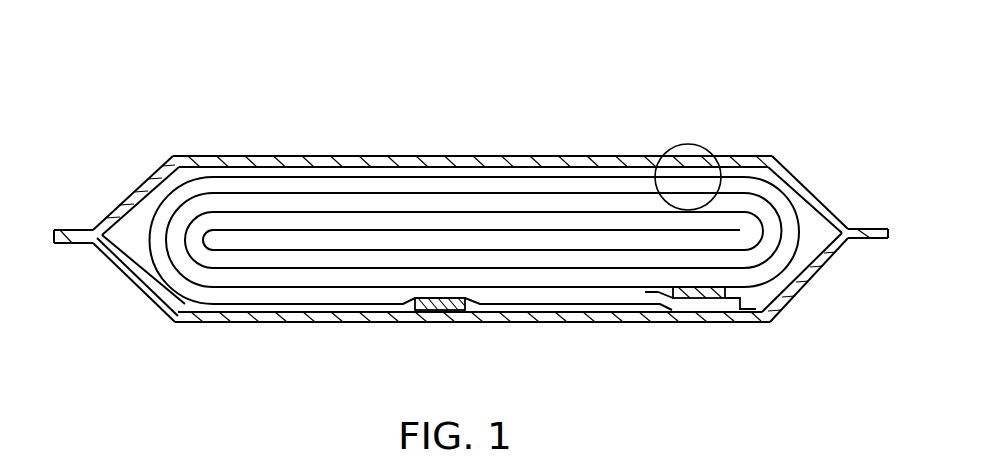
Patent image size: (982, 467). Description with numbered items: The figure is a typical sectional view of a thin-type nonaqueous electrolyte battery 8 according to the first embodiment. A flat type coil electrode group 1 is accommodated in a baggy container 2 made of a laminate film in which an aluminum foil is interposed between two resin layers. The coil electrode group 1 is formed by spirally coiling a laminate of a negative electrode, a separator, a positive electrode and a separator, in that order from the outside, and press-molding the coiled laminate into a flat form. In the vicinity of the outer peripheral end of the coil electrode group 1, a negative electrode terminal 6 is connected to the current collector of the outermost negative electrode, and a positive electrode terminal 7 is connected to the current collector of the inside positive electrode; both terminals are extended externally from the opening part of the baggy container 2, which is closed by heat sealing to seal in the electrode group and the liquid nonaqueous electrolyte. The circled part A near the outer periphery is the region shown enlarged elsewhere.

The thin-type nonaqueous electrolyte battery 8 is at (475, 53).
The flat type coil electrode group 1 is at (286, 187).
The baggy container 2 is at (508, 156).
The negative electrode terminal 6 is at (452, 306).
The positive electrode terminal 7 is at (697, 296).
The part A is at (688, 144).